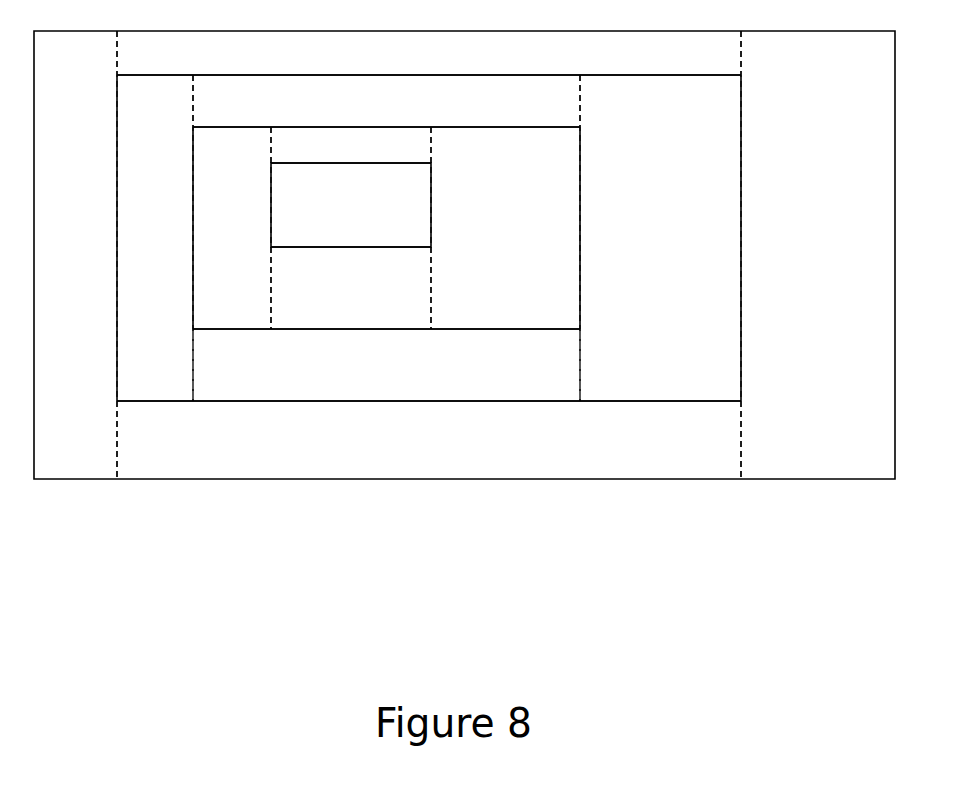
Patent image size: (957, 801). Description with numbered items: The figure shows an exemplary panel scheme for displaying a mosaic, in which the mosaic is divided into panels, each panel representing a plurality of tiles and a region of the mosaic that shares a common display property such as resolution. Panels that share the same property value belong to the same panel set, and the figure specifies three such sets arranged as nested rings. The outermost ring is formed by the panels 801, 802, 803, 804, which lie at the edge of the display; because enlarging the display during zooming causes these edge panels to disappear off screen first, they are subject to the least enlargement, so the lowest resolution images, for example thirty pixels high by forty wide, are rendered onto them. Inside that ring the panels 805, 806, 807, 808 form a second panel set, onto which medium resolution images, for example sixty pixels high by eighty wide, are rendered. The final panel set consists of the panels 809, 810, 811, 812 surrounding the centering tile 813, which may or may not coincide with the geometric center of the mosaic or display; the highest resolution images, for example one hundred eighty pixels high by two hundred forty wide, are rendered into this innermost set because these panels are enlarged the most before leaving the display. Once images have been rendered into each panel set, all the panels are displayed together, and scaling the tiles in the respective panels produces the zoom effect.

The panel 801 is at (75, 255).
The panel 802 is at (429, 53).
The panel 803 is at (818, 255).
The panel 804 is at (429, 440).
The panel 805 is at (155, 238).
The panel 806 is at (386, 101).
The panel 807 is at (660, 238).
The panel 808 is at (386, 365).
The panel 809 is at (232, 228).
The panel 810 is at (351, 145).
The panel 811 is at (505, 228).
The panel 812 is at (351, 288).
The centering tile 813 is at (351, 205).